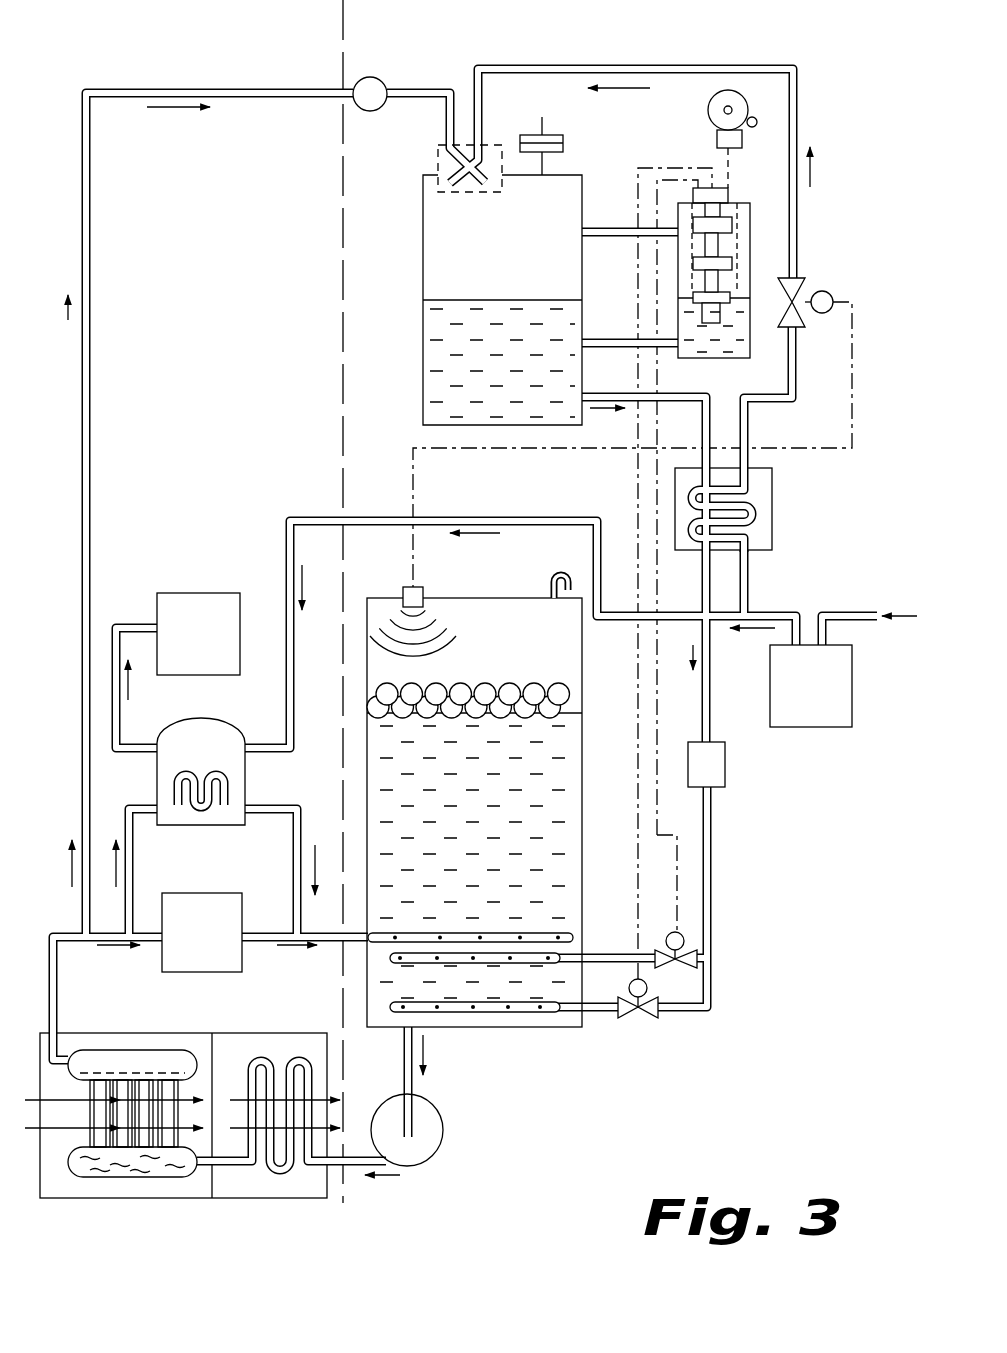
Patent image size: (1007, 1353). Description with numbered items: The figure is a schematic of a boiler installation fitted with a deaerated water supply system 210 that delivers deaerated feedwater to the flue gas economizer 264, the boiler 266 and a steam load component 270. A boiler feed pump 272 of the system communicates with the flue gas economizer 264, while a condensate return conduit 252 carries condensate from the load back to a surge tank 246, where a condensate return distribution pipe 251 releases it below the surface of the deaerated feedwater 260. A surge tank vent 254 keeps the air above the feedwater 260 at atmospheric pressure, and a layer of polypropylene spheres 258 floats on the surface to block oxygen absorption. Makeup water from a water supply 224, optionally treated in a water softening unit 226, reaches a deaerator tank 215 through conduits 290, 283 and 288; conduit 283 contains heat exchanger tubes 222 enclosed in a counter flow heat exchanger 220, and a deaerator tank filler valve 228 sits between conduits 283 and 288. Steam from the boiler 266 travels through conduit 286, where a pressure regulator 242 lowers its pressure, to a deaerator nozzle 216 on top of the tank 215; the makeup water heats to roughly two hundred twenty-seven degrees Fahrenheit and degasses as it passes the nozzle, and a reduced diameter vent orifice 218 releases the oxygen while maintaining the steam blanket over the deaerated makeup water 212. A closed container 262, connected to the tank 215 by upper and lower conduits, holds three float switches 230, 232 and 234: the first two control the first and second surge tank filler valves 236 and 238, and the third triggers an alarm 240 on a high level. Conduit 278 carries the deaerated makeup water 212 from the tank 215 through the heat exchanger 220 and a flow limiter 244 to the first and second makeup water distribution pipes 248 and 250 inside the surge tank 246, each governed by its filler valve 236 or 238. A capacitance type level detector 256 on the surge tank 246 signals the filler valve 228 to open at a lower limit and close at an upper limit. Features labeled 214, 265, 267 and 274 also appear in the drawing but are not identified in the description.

The deaerated water supply system 210 is at (506, 56).
The deaerated makeup water 212 is at (430, 358).
The tank 214 is at (448, 240).
The deaerator tank 215 is at (405, 315).
The deaerator nozzle 216 is at (438, 166).
The reduced diameter vent orifice 218 is at (530, 130).
The counter flow heat exchanger 220 is at (762, 503).
The heat exchanger tubes 222 is at (748, 515).
The water supply 224 is at (905, 612).
The water softening unit 226 is at (819, 731).
The deaerator tank filler valve 228 is at (824, 313).
The first float switch 230 is at (725, 295).
The second float switch 232 is at (725, 265).
The third float switch 234 is at (722, 223).
The first surge tank filler valve 236 is at (685, 975).
The second surge tank filler valve 238 is at (640, 1027).
The alarm 240 is at (707, 108).
The pressure regulator 242 is at (371, 77).
The flow limiter 244 is at (727, 772).
The surge tank 246 is at (588, 867).
The first makeup water distribution pipe 248 is at (533, 967).
The second makeup water distribution pipe 250 is at (490, 1015).
The condensate return distribution pipe 251 is at (585, 937).
The condensate return conduit 252 is at (330, 945).
The surge tank vent 254 is at (550, 578).
The capacitance type level detector 256 is at (405, 587).
The polypropylene spheres 258 is at (512, 690).
The deaerated feedwater 260 is at (203, 905).
The closed container 262 is at (708, 360).
The flue gas economizer 264 is at (183, 1139).
The coil 265 is at (220, 1040).
The boiler 266 is at (135, 1200).
The liquid 267 is at (73, 1150).
The steam load component 270 is at (200, 732).
The boiler feed pump 272 is at (425, 1150).
The unit 274 is at (196, 612).
The conduit 278 is at (712, 712).
The conduit 283 is at (752, 425).
The conduit 286 is at (92, 183).
The conduit 288 is at (655, 62).
The conduit 290 is at (778, 612).